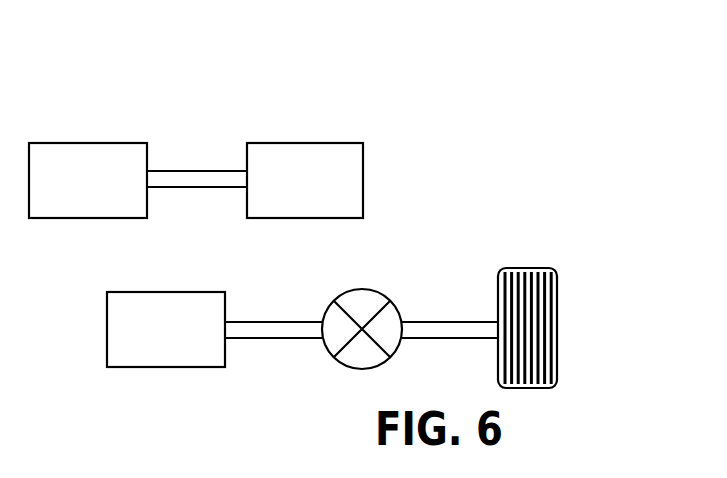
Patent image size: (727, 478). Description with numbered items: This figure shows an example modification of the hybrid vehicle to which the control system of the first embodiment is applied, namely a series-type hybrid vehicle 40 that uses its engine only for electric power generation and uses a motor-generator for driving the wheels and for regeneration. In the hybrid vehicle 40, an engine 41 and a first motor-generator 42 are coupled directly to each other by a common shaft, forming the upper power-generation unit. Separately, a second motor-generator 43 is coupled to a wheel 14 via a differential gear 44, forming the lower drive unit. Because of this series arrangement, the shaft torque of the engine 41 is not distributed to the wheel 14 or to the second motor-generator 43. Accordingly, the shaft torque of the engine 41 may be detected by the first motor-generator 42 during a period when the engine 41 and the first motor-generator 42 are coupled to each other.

The hybrid vehicle 40 is at (412, 125).
The engine 41 is at (84, 143).
The first motor-generator 42 is at (292, 143).
The second motor-generator 43 is at (163, 292).
The differential gear 44 is at (362, 289).
The wheel 14 is at (557, 310).